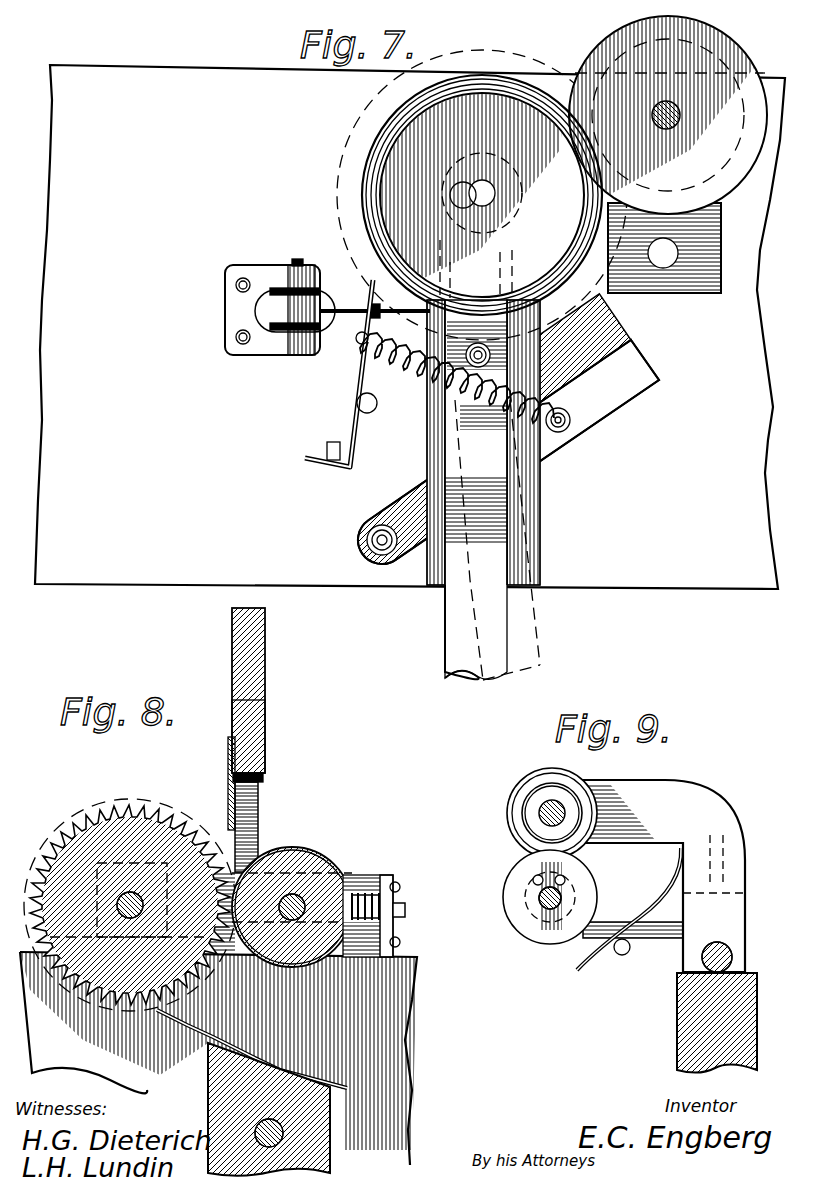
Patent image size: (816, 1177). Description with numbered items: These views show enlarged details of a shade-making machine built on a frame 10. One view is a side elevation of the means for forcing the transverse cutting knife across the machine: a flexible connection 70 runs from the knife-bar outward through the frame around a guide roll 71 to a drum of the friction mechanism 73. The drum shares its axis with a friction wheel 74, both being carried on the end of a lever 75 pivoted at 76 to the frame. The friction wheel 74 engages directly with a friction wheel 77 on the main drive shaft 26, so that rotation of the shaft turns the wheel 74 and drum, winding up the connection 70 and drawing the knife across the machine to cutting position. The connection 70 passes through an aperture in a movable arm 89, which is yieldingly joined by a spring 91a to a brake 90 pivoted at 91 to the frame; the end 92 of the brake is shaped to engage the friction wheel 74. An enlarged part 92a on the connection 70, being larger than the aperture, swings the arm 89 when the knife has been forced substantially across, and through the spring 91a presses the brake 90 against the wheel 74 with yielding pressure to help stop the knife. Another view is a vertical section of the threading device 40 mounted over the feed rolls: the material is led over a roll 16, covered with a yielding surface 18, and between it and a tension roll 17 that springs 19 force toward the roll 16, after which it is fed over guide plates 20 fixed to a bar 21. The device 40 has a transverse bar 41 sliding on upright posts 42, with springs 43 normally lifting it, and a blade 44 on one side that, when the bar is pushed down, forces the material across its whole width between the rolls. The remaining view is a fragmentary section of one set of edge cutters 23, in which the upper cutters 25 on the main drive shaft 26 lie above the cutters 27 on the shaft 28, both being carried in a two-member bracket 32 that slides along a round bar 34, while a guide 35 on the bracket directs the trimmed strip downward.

In FIG. 7, the frame 10 is at (105, 565).
In FIG. 8, the roll 16 is at (87, 837).
In FIG. 8, the tension roll 17 is at (335, 867).
In FIG. 8, the yielding surface 18 is at (117, 800).
In FIG. 8, the springs 19 is at (385, 895).
In FIG. 8, the guide plates 20 is at (347, 1087).
In FIG. 8, the fixed bar 21 is at (317, 1160).
In FIG. 9, the set of cutters 23 is at (522, 813).
In FIG. 9, the cutters 25 is at (532, 780).
In FIG. 7, the main drive shaft 26 is at (671, 130).
In FIG. 9, the main drive shaft 26 is at (537, 823).
In FIG. 9, the cutters 27 is at (525, 905).
In FIG. 9, the shaft 28 is at (548, 915).
In FIG. 9, the bracket 32 is at (655, 867).
In FIG. 9, the round bar 34 is at (733, 953).
In FIG. 9, the guide 35 is at (590, 960).
In FIG. 8, the device 40 is at (273, 690).
In FIG. 8, the transverse bar 41 is at (266, 712).
In FIG. 8, the upright posts 42 is at (260, 815).
In FIG. 8, the springs 43 is at (262, 792).
In FIG. 8, the blade 44 is at (230, 793).
In FIG. 7, the flexible connection 70 is at (347, 305).
In FIG. 7, the guide roll 71 is at (282, 300).
In FIG. 7, the friction mechanism 73 is at (447, 195).
In FIG. 7, the friction wheel 74 is at (508, 82).
In FIG. 7, the lever 75 is at (497, 567).
In FIG. 7, the pivot 76 is at (470, 352).
In FIG. 7, the friction wheel 77 is at (761, 47).
In FIG. 7, the movable arm 89 is at (350, 420).
In FIG. 7, the brake 90 is at (620, 403).
In FIG. 7, the pivot 91 is at (368, 540).
In FIG. 7, the spring 91a is at (412, 380).
In FIG. 7, the end of brake 92 is at (625, 320).
In FIG. 7, the enlarged part 92a is at (358, 337).